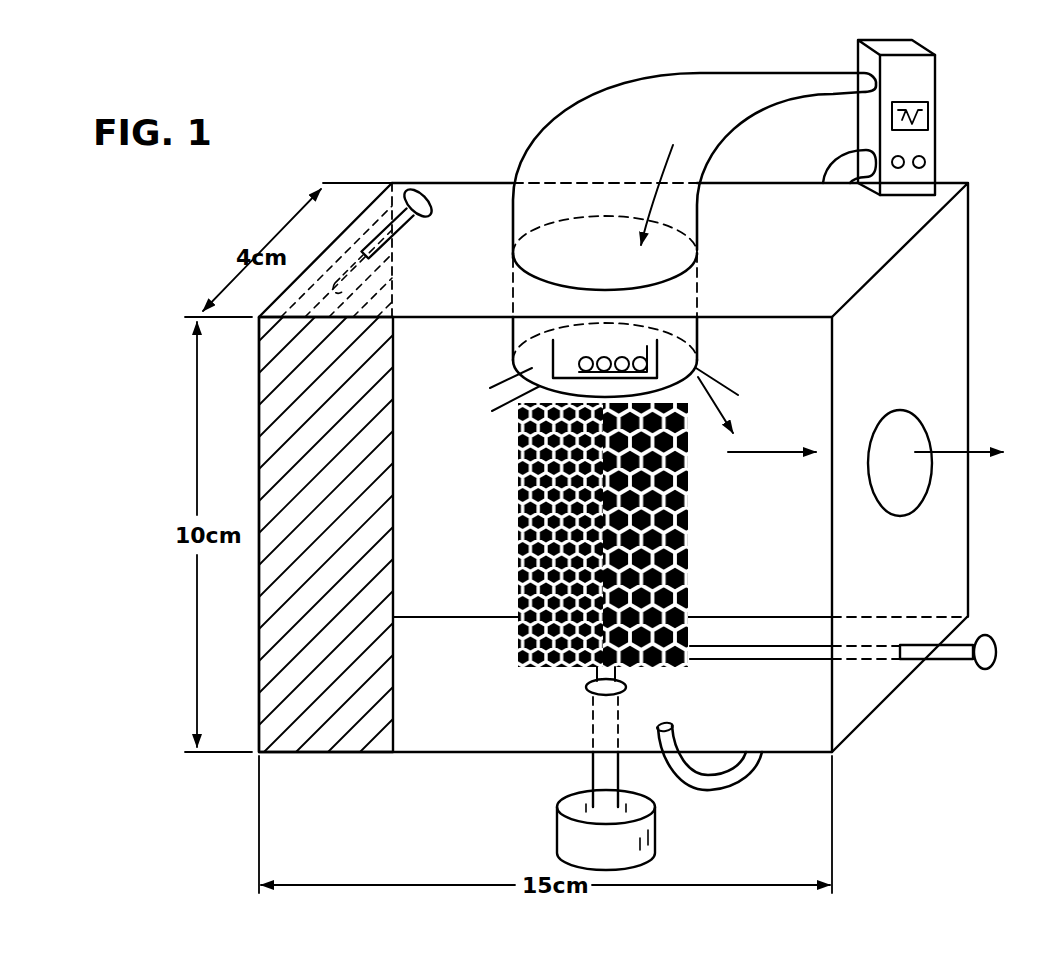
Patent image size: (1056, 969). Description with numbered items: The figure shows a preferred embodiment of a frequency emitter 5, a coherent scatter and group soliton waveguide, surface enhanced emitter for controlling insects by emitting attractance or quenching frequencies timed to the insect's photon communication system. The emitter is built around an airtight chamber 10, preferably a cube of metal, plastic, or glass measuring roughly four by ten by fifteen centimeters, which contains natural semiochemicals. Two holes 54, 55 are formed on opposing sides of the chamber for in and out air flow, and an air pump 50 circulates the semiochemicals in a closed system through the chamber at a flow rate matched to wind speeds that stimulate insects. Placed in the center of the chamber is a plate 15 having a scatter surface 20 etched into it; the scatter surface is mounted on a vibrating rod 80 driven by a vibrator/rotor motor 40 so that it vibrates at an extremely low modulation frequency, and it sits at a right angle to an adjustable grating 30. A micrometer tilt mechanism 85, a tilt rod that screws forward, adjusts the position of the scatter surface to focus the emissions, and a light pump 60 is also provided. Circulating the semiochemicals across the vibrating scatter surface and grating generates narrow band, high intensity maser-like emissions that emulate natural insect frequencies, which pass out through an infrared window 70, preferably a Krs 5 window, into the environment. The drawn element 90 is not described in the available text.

The frequency emitter 5 is at (338, 806).
The chamber 10 is at (330, 753).
The plate 15 is at (519, 547).
The scatter surface 20 is at (700, 560).
The adjustable grating 30 is at (386, 462).
The vibrator/rotor motor 40 is at (556, 833).
The air pump 50 is at (937, 82).
The hole 54 is at (672, 724).
The hole 55 is at (527, 272).
The light pump 60 is at (575, 352).
The infrared window 70 is at (893, 518).
The vibrating rod 80 is at (591, 762).
The micrometer tilt mechanism 85 is at (990, 636).
The thermocouple probe 90 is at (432, 188).